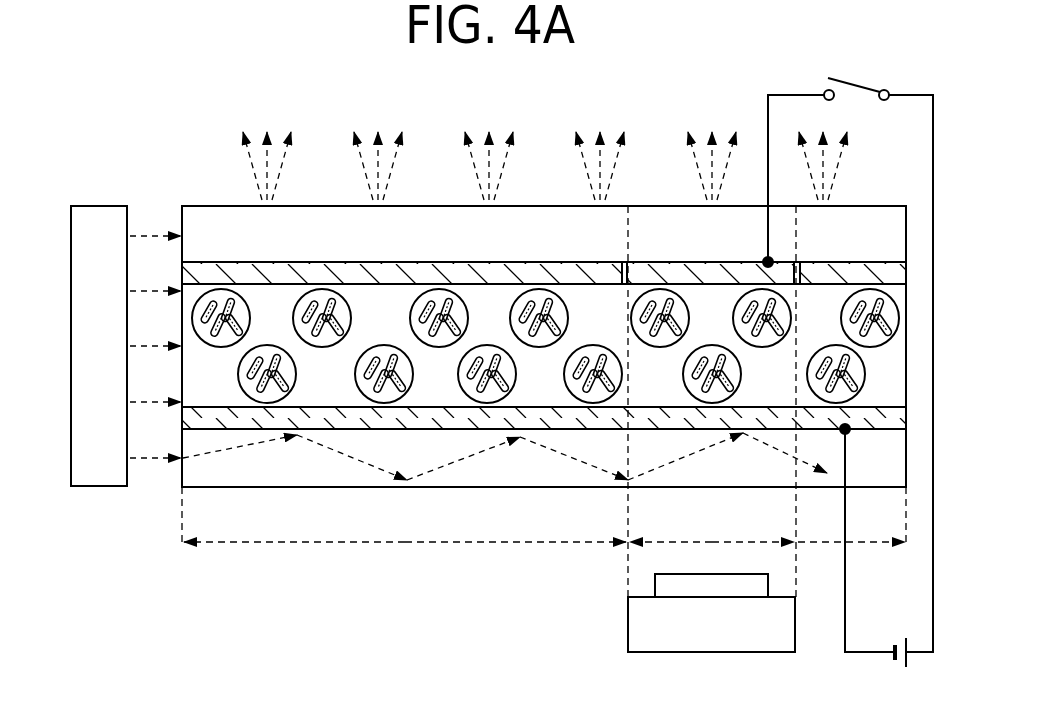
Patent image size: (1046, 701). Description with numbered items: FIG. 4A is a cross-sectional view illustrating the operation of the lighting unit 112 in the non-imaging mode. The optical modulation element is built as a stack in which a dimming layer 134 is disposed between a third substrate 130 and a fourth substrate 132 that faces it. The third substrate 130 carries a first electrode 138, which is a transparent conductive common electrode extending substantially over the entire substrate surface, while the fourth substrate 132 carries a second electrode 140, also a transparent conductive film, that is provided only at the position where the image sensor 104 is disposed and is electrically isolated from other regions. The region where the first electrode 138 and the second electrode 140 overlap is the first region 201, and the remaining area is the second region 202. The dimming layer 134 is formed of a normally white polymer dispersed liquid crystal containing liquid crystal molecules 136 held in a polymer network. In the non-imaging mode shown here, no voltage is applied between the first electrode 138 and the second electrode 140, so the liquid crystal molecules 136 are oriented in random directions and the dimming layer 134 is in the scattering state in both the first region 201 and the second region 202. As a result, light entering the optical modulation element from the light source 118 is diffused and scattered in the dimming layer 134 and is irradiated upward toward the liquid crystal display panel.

The lighting unit 112 is at (153, 153).
The light source 118 is at (98, 475).
The fourth substrate 132 is at (901, 239).
The second electrode 140 is at (655, 270).
The liquid crystal molecules 136 is at (440, 300).
The dimming layer 134 is at (545, 395).
The first electrode 138 is at (265, 422).
The third substrate 130 is at (901, 480).
The second region 202 is at (405, 529).
The first region 201 is at (767, 530).
The image sensor 104 is at (640, 626).